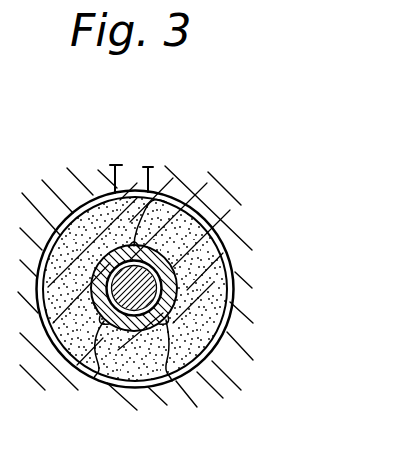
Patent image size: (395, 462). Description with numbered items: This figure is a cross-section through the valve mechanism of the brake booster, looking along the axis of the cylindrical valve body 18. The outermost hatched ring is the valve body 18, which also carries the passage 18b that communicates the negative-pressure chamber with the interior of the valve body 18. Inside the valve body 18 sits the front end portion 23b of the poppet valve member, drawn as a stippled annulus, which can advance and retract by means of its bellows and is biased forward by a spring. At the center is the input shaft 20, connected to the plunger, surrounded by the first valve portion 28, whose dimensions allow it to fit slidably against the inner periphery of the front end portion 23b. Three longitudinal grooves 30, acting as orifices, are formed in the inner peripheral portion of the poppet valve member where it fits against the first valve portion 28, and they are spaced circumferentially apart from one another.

The valve body 18 is at (213, 192).
The passage 18b is at (115, 182).
The input shaft 20 is at (160, 292).
The front end portion of the poppet valve member 23b is at (222, 346).
The first valve portion 28 is at (173, 275).
The longitudinal grooves 30 is at (166, 202).